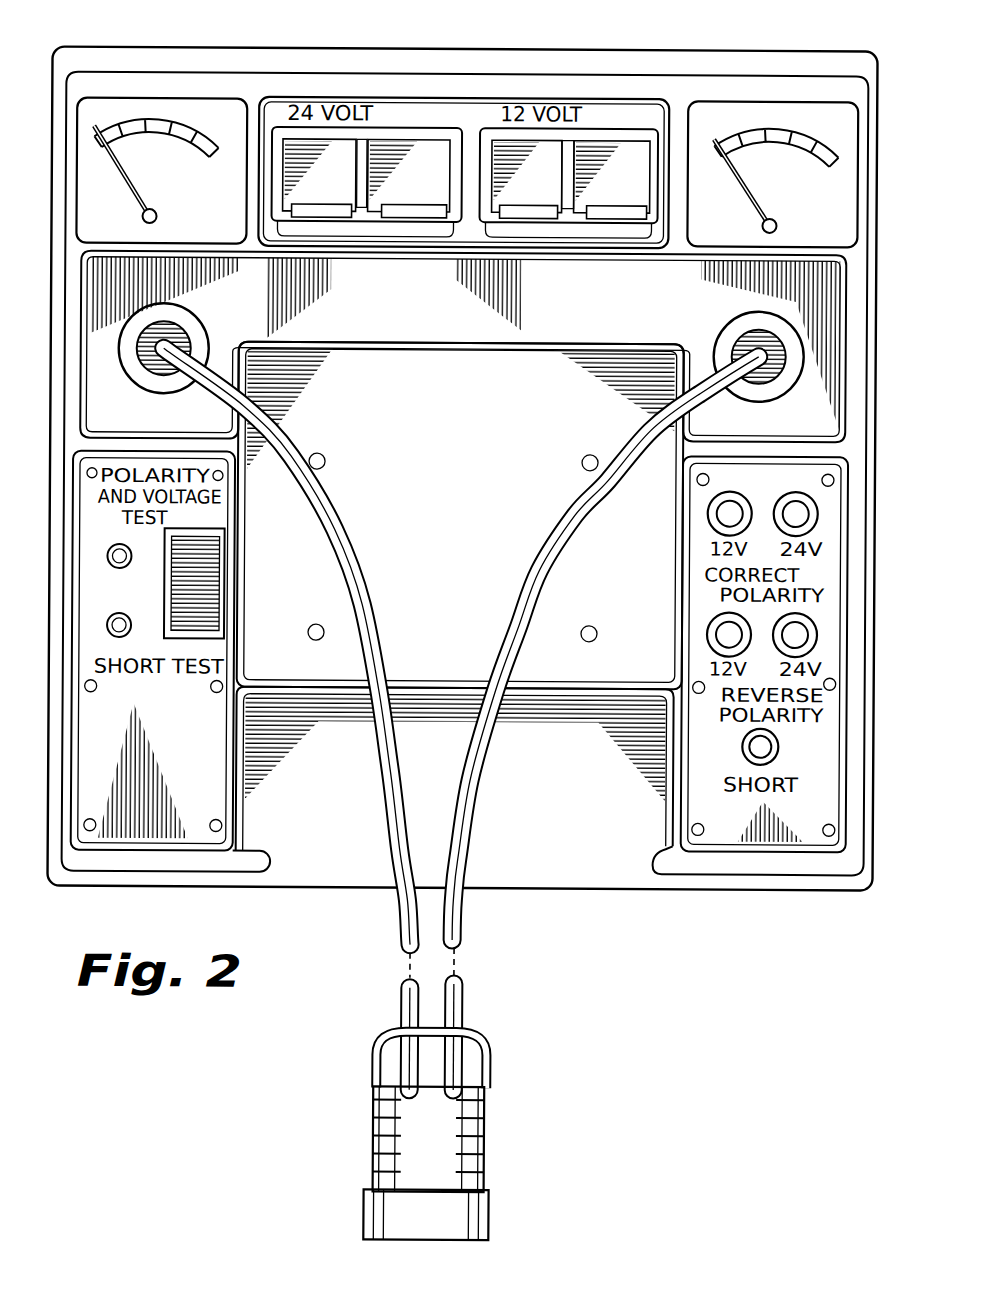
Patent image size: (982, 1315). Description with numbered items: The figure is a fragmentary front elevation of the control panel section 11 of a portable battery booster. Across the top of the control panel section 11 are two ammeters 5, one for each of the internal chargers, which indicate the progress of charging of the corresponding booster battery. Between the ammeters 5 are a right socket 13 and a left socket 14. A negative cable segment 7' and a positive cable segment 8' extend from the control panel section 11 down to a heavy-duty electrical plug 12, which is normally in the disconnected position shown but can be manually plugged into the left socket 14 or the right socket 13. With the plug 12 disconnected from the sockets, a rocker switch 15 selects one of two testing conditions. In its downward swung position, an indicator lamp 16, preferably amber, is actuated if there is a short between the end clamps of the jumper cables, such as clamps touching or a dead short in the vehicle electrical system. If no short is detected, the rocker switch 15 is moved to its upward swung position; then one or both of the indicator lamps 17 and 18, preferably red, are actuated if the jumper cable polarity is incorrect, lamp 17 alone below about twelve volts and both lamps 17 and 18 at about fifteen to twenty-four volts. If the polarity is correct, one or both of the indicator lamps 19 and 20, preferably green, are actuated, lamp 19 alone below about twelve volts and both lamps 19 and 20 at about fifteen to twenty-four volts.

The ammeter 5 is at (183, 107).
The negative cable segment 7' is at (603, 723).
The positive cable segment 8' is at (286, 719).
The control panel section 11 is at (319, 898).
The heavy-duty electrical plug 12 is at (450, 1146).
The right socket 13 is at (366, 190).
The left socket 14 is at (562, 184).
The rocker switch 15 is at (205, 600).
The indicator lamp 16 is at (765, 745).
The indicator lamp 17 is at (728, 633).
The indicator lamp 18 is at (798, 632).
The indicator lamp 19 is at (728, 512).
The indicator lamp 20 is at (798, 511).